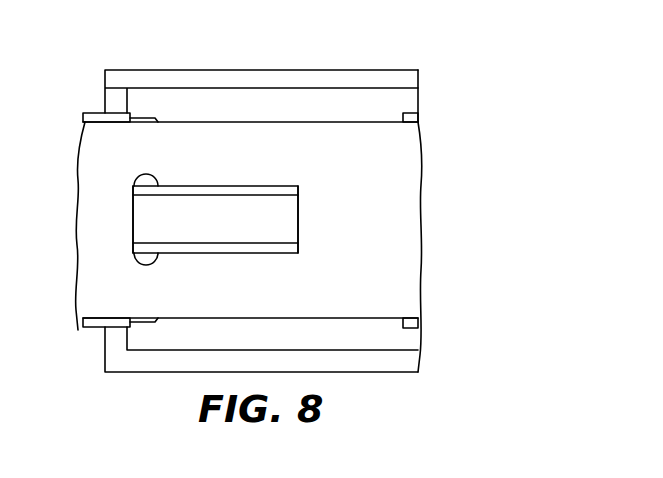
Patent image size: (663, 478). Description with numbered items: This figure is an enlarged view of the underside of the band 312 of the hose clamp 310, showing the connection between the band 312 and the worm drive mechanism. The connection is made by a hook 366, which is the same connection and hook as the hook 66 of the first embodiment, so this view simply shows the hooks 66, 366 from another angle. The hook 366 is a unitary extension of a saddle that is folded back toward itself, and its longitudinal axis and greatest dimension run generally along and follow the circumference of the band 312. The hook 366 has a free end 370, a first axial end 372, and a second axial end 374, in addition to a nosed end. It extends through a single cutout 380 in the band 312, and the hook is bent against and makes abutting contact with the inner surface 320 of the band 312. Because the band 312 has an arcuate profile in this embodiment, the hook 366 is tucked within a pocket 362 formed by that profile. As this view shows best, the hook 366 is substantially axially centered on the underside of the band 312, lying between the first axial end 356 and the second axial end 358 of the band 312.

The hose clamp 310 is at (311, 221).
The band 312 is at (263, 117).
The inner surface 320 is at (372, 287).
The first axial end 356 is at (192, 138).
The second axial end 358 is at (190, 318).
The pocket 362 is at (390, 248).
The hook 366 is at (231, 222).
The hook 66 is at (231, 223).
The free end 370 is at (298, 212).
The first axial end 372 is at (183, 187).
The second axial end 374 is at (217, 255).
The cutout 380 is at (135, 232).